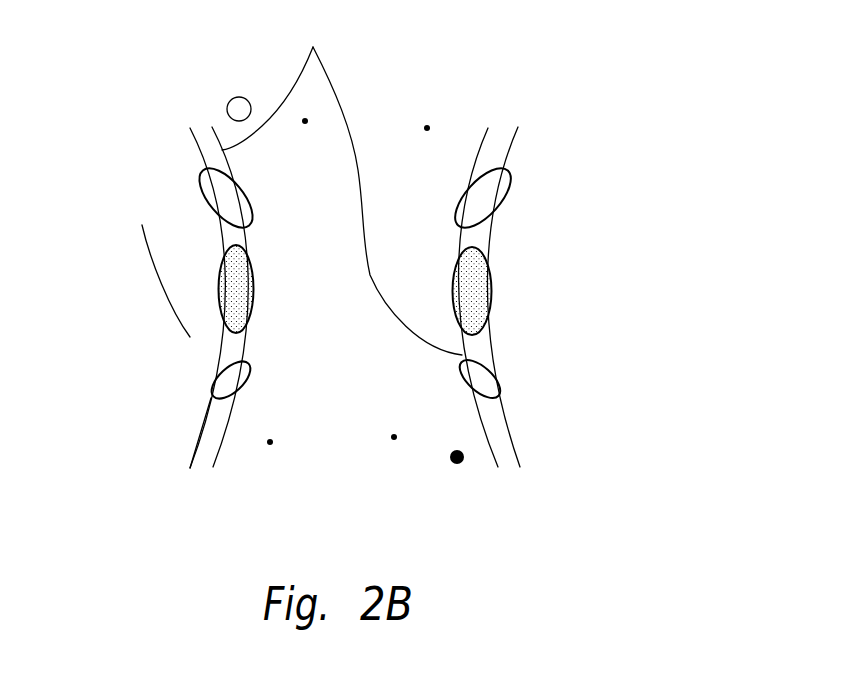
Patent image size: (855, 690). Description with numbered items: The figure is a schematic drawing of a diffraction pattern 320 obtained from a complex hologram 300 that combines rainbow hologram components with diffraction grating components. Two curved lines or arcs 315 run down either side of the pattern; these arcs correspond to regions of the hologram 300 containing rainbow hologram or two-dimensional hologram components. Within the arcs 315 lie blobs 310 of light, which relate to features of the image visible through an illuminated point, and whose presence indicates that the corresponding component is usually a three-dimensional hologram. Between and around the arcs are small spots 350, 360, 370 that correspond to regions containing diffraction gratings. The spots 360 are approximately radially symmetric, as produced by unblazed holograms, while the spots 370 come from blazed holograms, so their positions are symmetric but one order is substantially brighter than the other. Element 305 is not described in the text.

The hologram 300 is at (342, 184).
The right support arm 305 is at (488, 142).
The blobs 310 is at (214, 381).
The lines or arcs 315 is at (205, 450).
The diffraction pattern 320 is at (167, 380).
The small spots 350 is at (425, 126).
The spots 360 is at (306, 124).
The spots 370 is at (233, 98).